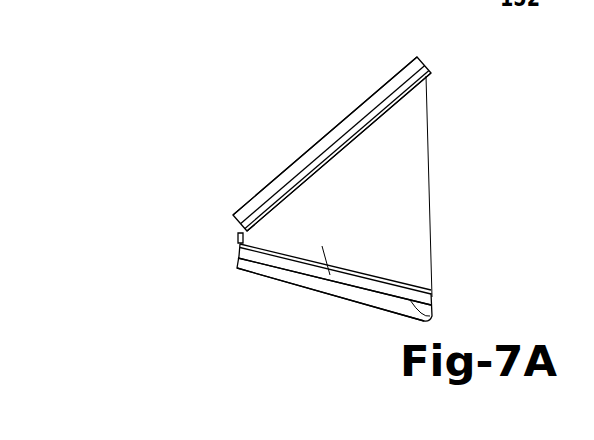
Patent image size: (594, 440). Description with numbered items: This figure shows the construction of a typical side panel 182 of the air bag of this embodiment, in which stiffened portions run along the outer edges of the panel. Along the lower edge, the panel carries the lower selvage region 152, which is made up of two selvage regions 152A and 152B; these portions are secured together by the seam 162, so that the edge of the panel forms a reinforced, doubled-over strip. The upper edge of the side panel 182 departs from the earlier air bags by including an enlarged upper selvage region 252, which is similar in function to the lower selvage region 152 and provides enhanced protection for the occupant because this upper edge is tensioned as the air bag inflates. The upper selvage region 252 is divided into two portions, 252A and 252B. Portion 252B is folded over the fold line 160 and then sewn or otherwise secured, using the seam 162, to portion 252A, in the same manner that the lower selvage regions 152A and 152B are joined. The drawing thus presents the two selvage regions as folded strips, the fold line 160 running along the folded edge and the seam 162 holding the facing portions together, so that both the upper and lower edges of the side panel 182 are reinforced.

The upper selvage region 252 is at (357, 114).
The portion of upper selvage region 252A is at (376, 120).
The portion of upper selvage region 252B is at (382, 83).
The fold line 160 is at (401, 73).
The seam 162 is at (393, 109).
The lower selvage region 152 is at (266, 271).
The selvage region 152A is at (273, 258).
The selvage region 152B is at (308, 280).
The side panel 182 is at (330, 275).